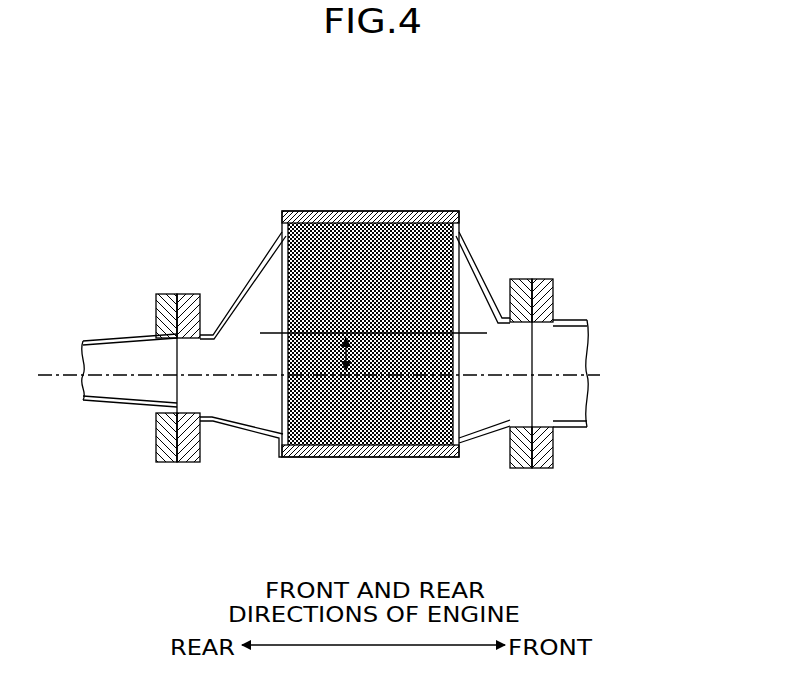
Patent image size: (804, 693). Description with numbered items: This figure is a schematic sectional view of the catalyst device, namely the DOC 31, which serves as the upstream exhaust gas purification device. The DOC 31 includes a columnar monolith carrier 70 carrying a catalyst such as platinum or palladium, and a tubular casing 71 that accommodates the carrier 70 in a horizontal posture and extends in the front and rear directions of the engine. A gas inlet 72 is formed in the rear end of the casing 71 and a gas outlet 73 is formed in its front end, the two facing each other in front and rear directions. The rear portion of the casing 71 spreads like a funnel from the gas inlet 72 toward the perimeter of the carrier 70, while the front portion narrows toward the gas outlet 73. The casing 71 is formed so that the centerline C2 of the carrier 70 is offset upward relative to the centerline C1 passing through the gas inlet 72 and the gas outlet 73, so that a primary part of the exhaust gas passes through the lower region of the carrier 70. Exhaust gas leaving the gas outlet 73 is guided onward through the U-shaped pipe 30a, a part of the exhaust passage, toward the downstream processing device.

The DOC (Diesel Oxidation Catalyst) 31 is at (488, 180).
The casing 71 is at (418, 211).
The monolith carrier 70 is at (407, 418).
The gas inlet 72 is at (178, 388).
The gas outlet 73 is at (533, 395).
The U-shaped pipe 30a is at (570, 322).
The centerline passing through the gas inlet and the gas outlet C1 is at (340, 377).
The centerline of the carrier C2 is at (400, 330).